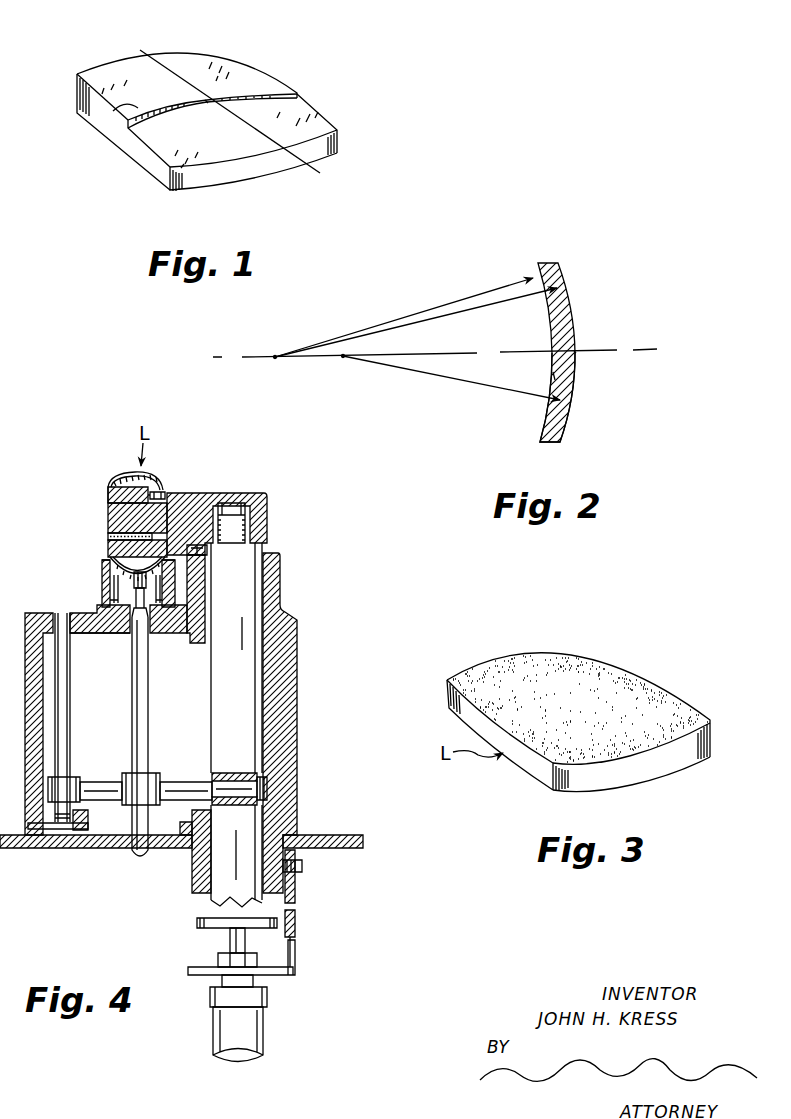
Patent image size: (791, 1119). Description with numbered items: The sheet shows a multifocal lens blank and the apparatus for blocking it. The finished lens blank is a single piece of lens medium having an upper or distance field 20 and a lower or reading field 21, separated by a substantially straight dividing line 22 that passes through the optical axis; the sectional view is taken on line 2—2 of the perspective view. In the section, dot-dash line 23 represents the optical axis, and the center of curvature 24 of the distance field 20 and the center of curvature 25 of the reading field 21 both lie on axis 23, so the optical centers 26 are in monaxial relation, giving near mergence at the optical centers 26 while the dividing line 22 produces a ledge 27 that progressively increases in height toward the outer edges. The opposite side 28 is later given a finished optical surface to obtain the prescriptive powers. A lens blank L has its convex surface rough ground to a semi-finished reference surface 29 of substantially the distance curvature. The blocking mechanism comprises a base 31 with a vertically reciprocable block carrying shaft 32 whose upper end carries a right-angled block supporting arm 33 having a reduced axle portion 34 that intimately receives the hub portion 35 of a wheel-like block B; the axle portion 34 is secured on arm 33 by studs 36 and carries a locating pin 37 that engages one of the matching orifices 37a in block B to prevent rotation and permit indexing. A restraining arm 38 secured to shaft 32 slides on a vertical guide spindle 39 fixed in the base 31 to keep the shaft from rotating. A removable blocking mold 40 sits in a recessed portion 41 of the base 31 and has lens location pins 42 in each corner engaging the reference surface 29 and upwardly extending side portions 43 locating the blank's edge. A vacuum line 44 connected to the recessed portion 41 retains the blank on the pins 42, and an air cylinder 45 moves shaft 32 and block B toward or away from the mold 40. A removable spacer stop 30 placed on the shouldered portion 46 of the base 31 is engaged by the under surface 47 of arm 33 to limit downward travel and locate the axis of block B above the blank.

In FIG. 1, the section line 2— 2 is at (143, 38).
In FIG. 1, the distance field 20 is at (250, 80).
In FIG. 2, the distance field 20 is at (570, 300).
In FIG. 1, the reading field 21 is at (307, 118).
In FIG. 2, the reading field 21 is at (563, 418).
In FIG. 1, the dividing line 22 is at (177, 102).
In FIG. 2, the optical axis 23 is at (430, 357).
In FIG. 2, the center of curvature of the distance field 24 is at (300, 357).
In FIG. 2, the center of curvature of the reading field 25 is at (343, 357).
In FIG. 1, the optical centers 26 is at (207, 100).
In FIG. 2, the optical centers 26 is at (577, 350).
In FIG. 1, the ledge 27 is at (80, 115).
In FIG. 1, the opposite side 28 is at (227, 188).
In FIG. 2, the opposite side 28 is at (553, 376).
In FIG. 3, the reference surface 29 is at (650, 687).
In FIG. 4, the spacer stop 30 is at (203, 549).
In FIG. 4, the base 31 is at (288, 705).
In FIG. 4, the block carrying shaft 32 is at (248, 662).
In FIG. 4, the block supporting arm 33 is at (197, 500).
In FIG. 4, the axle portion 34 is at (120, 523).
In FIG. 4, the hub portion 35 is at (110, 502).
In FIG. 4, the studs 36 is at (160, 497).
In FIG. 4, the locating pin 37 is at (147, 552).
In FIG. 4, the matching orifices 37a is at (143, 480).
In FIG. 4, the restraining arm 38 is at (95, 780).
In FIG. 4, the vertical guide spindle 39 is at (67, 697).
In FIG. 4, the blocking mold 40 is at (103, 583).
In FIG. 4, the recessed portion 41 is at (110, 633).
In FIG. 4, the lens location pins 42 is at (143, 591).
In FIG. 4, the side portions 43 is at (102, 562).
In FIG. 4, the vacuum line 44 is at (140, 738).
In FIG. 4, the air cylinder 45 is at (263, 1020).
In FIG. 4, the shouldered portion 46 is at (193, 576).
In FIG. 4, the under surface 47 is at (202, 537).
In FIG. 4, the block B is at (108, 492).